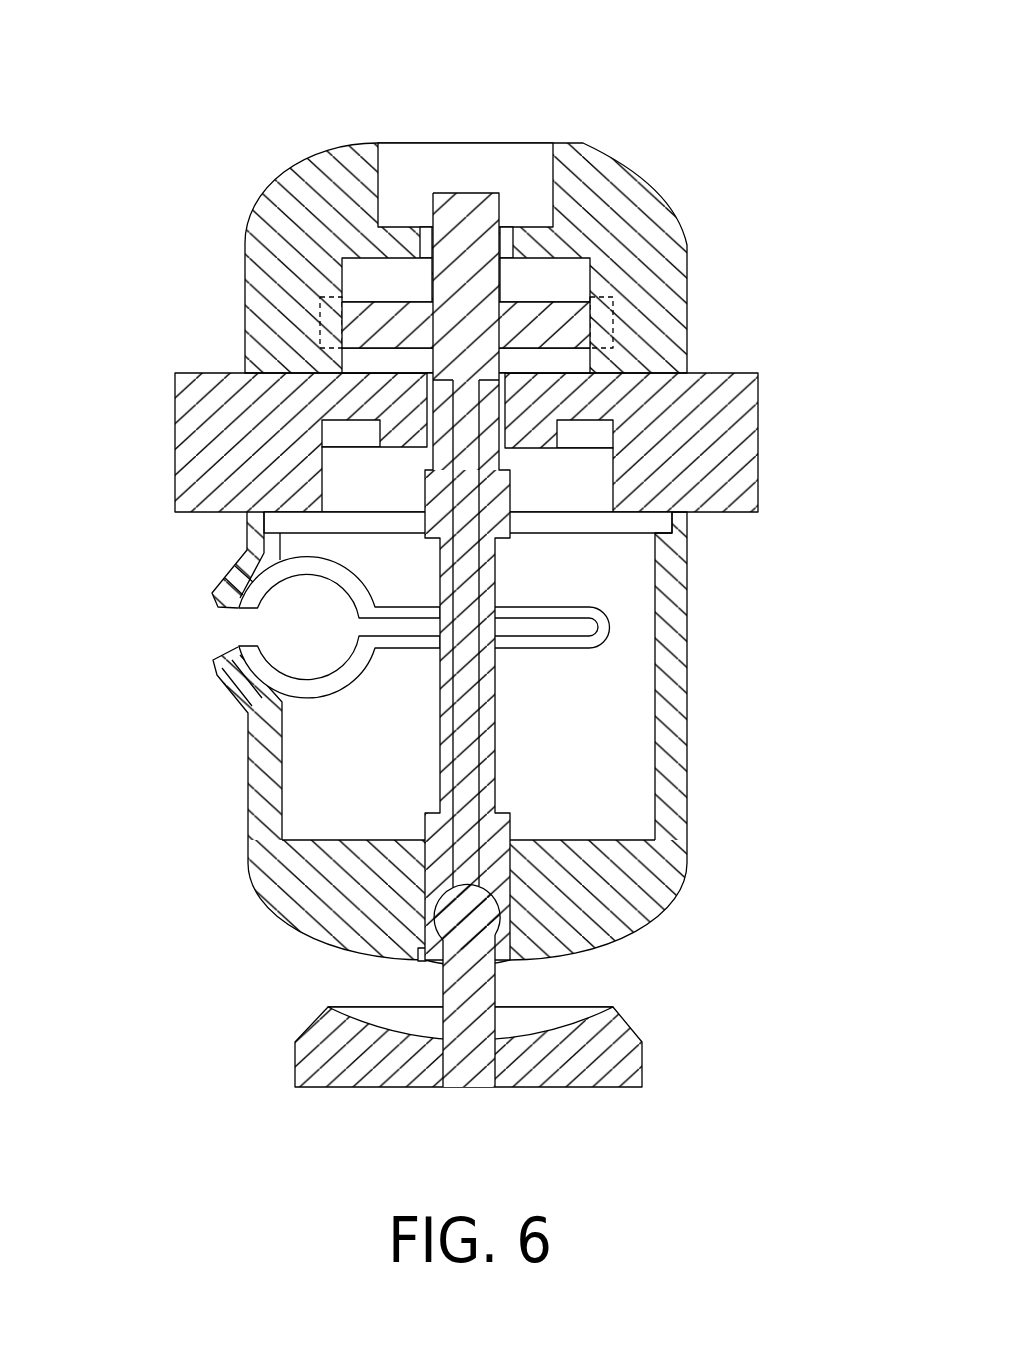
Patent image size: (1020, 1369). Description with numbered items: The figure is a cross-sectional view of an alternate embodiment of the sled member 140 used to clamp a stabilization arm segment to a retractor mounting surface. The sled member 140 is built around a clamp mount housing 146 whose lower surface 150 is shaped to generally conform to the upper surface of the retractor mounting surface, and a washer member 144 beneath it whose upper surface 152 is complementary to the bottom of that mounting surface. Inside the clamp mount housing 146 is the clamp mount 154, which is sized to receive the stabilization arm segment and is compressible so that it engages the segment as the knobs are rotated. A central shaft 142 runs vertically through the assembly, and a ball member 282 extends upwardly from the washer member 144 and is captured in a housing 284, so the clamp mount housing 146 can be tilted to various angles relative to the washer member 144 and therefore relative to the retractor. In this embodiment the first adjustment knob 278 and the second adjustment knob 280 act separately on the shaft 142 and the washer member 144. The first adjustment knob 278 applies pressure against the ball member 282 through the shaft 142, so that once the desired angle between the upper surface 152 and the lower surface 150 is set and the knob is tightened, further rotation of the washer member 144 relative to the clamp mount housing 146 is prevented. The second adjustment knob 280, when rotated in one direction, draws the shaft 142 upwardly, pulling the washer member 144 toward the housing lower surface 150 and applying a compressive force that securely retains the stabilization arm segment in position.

The sled member 140 is at (160, 32).
The first adjustment knob 278 is at (641, 176).
The second adjustment knob 280 is at (759, 442).
The clamp mount 154 is at (236, 629).
The clamp mount housing 146 is at (689, 741).
The ball member 282 is at (490, 906).
The lower surface 150 is at (661, 908).
The housing 284 is at (415, 958).
The upper surface 152 is at (358, 1007).
The shaft 142 is at (496, 988).
The washer member 144 is at (580, 1088).